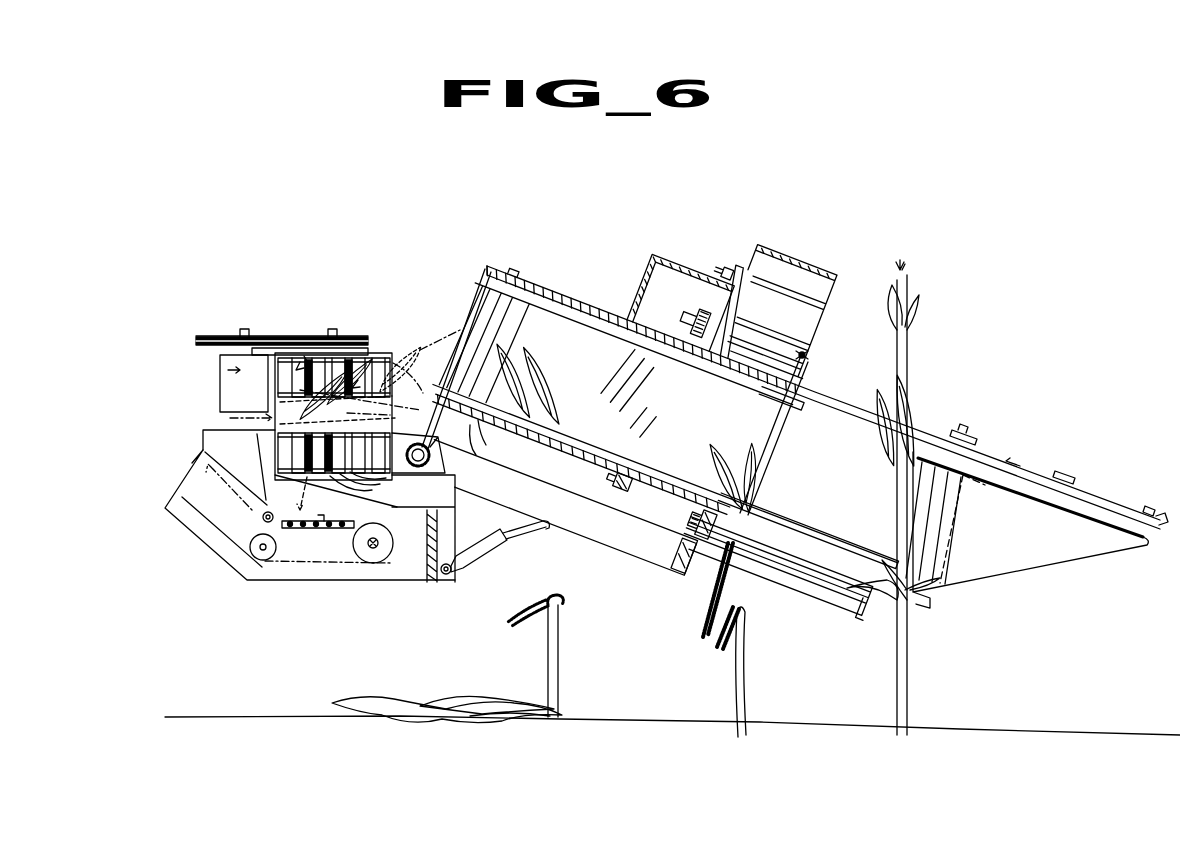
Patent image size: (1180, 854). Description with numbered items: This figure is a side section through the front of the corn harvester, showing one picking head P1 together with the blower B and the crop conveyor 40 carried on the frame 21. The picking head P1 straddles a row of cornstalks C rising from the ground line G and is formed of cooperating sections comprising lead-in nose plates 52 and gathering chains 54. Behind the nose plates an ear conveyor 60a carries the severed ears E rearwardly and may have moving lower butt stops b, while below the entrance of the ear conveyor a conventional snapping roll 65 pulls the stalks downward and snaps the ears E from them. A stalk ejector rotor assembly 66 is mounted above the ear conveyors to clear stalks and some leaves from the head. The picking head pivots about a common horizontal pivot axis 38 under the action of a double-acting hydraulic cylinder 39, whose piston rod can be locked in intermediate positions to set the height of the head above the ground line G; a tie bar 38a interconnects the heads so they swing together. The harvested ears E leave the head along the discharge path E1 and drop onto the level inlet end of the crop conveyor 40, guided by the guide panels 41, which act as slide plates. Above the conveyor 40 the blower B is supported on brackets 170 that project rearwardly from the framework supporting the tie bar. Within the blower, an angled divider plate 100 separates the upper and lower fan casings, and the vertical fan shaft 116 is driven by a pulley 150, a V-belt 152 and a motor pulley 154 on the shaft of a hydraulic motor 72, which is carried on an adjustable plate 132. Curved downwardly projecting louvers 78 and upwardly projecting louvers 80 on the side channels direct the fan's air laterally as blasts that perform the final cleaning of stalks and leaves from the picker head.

The frame 21 is at (215, 557).
The common horizontal pivot axis 38 is at (422, 447).
The tie bar 38a is at (688, 578).
The double-acting hydraulic cylinder 39 is at (491, 561).
The crop conveyor 40 is at (330, 535).
The guide panels 41 is at (205, 440).
The lead-in nose plates 52 is at (1027, 530).
The gathering chains 54 is at (1088, 494).
The ear conveyor 60a is at (701, 380).
The snapping roll 65 is at (788, 540).
The stalk ejector rotor assembly 66 is at (806, 352).
The hydraulic motor 72 is at (228, 372).
The downwardly projecting louvers 78 is at (372, 483).
The upwardly projecting louvers 80 is at (368, 356).
The divider plate 100 is at (268, 408).
The fan shaft 116 is at (336, 328).
The plate 132 is at (252, 352).
The pulley 150 is at (304, 336).
The V-belt 152 is at (196, 341).
The motor pulley 154 is at (200, 335).
The brackets 170 is at (447, 506).
The blower B is at (377, 328).
The cornstalks C is at (768, 449).
The ears E is at (530, 386).
The discharge path E1 is at (430, 344).
The lower butt stops b is at (481, 437).
The ground line G is at (982, 718).
The picking head P1 is at (927, 433).